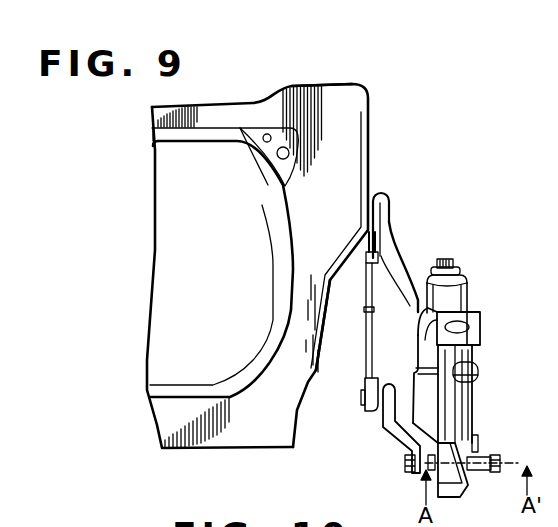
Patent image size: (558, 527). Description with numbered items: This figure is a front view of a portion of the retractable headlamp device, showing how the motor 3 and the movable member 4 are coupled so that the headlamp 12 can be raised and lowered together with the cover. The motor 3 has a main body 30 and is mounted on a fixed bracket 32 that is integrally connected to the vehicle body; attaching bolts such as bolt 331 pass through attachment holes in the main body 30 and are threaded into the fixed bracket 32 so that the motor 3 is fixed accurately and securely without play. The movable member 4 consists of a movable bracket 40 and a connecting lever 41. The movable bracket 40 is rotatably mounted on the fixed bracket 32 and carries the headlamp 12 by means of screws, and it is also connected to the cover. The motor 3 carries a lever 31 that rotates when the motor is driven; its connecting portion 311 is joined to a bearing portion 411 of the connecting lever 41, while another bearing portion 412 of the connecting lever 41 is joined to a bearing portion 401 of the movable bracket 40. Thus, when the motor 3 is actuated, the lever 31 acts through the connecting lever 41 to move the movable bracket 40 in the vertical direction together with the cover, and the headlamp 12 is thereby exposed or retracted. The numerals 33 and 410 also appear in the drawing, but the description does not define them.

The motor 3 is at (488, 323).
The movable member 4 is at (370, 101).
The headlamp 12 is at (165, 195).
The main body 30 is at (463, 405).
The lever 31 is at (397, 440).
The fixed bracket 32 is at (12, 513).
The member 33 is at (14, 422).
The movable bracket 40 is at (320, 92).
The connecting lever 41 is at (340, 328).
The connecting portion 311 is at (362, 401).
The attaching bolt 331 is at (498, 455).
The bearing portion 401 is at (376, 243).
The rod 410 is at (365, 263).
The bearing portion 411 is at (372, 422).
The bearing portion 412 is at (381, 258).